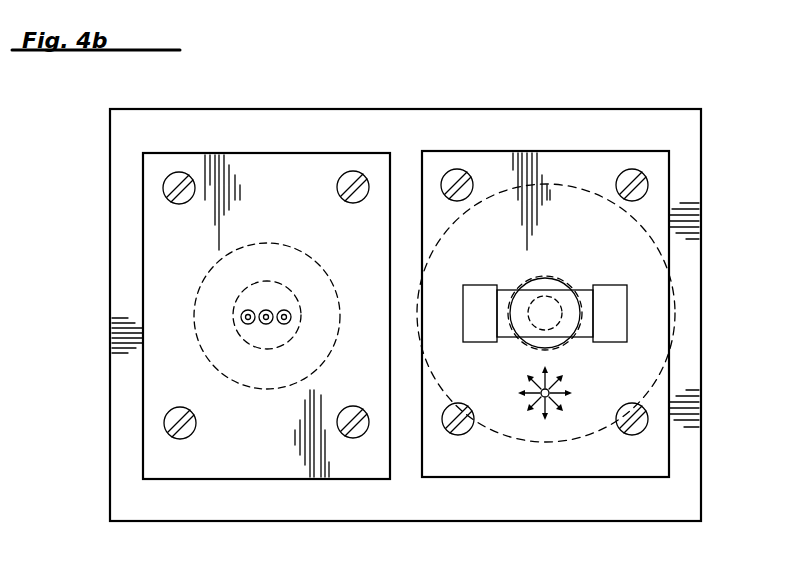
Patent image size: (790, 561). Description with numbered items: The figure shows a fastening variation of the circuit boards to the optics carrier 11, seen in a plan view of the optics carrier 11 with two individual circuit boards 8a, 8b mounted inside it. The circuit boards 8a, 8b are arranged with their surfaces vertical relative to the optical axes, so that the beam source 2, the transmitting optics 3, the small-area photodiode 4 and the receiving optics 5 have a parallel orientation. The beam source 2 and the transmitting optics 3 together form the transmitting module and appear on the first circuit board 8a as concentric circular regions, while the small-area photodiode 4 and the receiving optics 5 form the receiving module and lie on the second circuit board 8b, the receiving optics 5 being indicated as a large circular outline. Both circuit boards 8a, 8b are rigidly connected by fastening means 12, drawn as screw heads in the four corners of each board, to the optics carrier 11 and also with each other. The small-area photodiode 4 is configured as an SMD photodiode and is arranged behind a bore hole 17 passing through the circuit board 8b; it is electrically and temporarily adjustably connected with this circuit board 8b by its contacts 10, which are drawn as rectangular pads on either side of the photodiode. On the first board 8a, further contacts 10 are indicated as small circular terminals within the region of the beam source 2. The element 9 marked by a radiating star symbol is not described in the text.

The beam source 2 is at (285, 283).
The transmitting optics 3 is at (335, 291).
The small-area photodiode 4 is at (506, 300).
The receiving optics 5 is at (674, 326).
The circuit board 8a is at (275, 176).
The circuit board 8b is at (497, 176).
The light source 9 is at (545, 399).
The contacts 10 is at (263, 311).
The optics carrier 11 is at (585, 507).
The fastening means 12 is at (163, 190).
The bore hole 17 is at (553, 347).